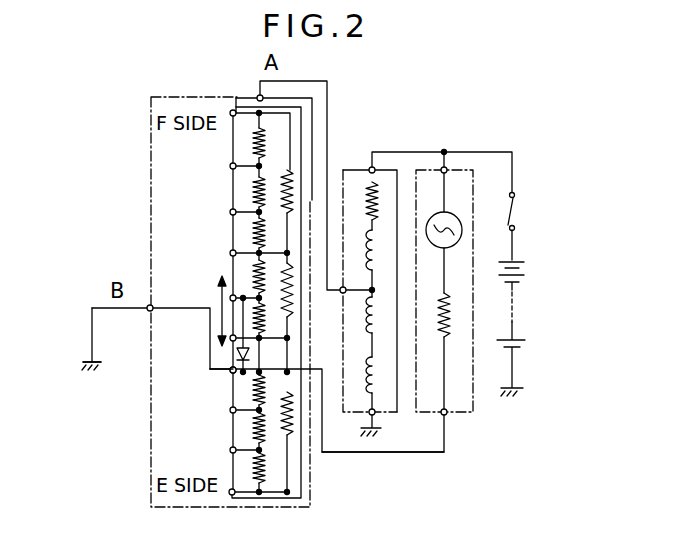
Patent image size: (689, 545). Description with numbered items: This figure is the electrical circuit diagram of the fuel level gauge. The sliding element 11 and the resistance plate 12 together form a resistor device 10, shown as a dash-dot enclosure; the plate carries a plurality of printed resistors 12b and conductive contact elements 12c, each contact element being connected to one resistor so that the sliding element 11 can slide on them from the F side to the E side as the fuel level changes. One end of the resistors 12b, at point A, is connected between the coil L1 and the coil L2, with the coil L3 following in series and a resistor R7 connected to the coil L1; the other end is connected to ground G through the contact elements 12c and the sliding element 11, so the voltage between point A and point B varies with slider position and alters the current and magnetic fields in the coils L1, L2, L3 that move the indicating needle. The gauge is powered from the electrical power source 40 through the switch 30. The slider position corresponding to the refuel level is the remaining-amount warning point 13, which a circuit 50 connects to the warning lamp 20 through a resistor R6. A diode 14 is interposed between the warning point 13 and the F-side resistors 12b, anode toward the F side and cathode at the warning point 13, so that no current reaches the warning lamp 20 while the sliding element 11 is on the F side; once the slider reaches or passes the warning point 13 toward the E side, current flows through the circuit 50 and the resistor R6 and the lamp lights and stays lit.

The resistor device 10 is at (148, 203).
The sliding element 11 is at (220, 380).
The resistance plate 12 is at (244, 94).
The resistors 12b is at (295, 203).
The contact elements 12c is at (243, 178).
The remaining-amount warning point 13 is at (215, 368).
The diode 14 is at (255, 352).
The warning lamp 20 is at (450, 200).
The switch 30 is at (516, 207).
The electrical power source 40 is at (527, 269).
The circuit 50 is at (367, 453).
The resistor R7 is at (364, 195).
The resistor R6 is at (456, 320).
The coil L1 is at (359, 251).
The coil L2 is at (366, 322).
The coil L3 is at (363, 380).
The point B is at (150, 308).
The ground G is at (88, 362).